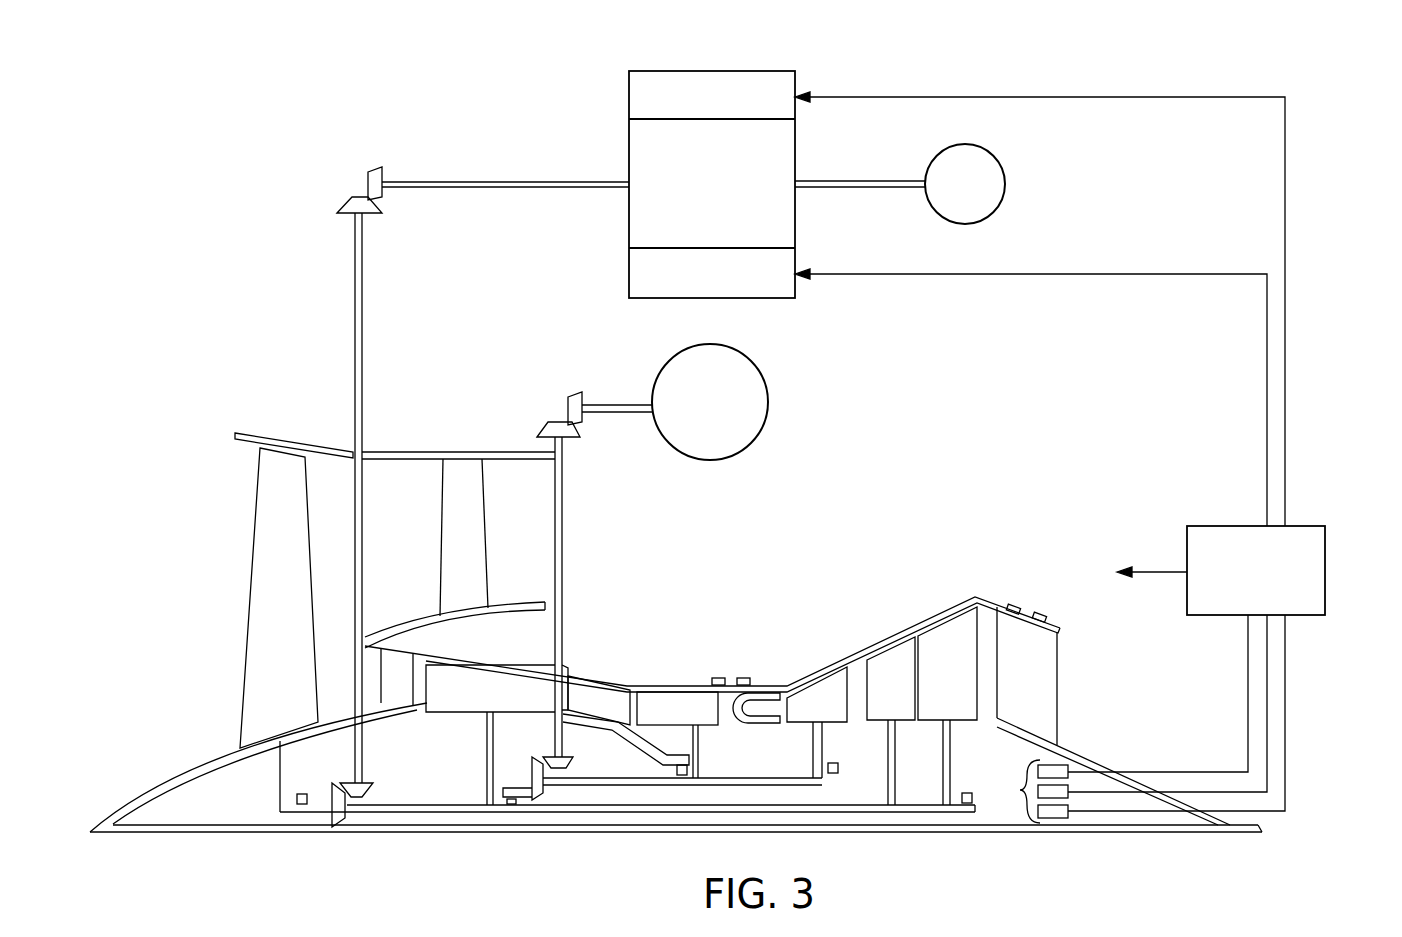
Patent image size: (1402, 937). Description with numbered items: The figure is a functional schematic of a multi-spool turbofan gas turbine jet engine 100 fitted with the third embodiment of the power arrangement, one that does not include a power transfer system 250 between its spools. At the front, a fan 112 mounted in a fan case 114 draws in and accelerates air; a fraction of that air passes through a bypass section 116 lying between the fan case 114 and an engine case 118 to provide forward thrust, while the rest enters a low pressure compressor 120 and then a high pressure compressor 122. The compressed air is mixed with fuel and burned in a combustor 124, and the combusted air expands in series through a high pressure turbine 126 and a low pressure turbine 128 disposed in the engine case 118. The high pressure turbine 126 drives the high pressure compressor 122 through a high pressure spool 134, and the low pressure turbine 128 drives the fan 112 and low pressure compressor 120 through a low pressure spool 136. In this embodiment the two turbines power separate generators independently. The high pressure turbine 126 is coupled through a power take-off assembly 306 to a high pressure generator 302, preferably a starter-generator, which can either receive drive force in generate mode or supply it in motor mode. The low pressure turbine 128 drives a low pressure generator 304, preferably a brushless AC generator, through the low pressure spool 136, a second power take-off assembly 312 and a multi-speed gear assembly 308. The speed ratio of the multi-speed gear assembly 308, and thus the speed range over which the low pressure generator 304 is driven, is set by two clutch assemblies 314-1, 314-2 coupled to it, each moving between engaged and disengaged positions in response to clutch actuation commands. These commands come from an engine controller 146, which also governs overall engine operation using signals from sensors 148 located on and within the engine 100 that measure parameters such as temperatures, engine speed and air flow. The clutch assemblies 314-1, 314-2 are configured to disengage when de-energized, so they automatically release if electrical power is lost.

The multi-spool turbofan gas turbine jet engine 100 is at (155, 770).
The fan 112 is at (262, 528).
The fan case 114 is at (272, 437).
The bypass section 116 is at (420, 535).
The engine case 118 is at (600, 676).
The low pressure compressor 120 is at (513, 690).
The high pressure compressor 122 is at (655, 703).
The combustor 124 is at (757, 703).
The high pressure turbine 126 is at (833, 688).
The low pressure turbine 128 is at (890, 657).
The high pressure spool 134 is at (645, 778).
The low pressure spool 136 is at (420, 803).
The engine controller 146 is at (1325, 572).
The sensors 148 is at (1020, 790).
The power transfer system 250 is at (312, 146).
The high pressure generator 302 is at (768, 404).
The low pressure generator 304 is at (1005, 186).
The power take-off assembly 306 is at (594, 532).
The multi-speed gear assembly 308 is at (629, 148).
The second power take-off assembly 312 is at (318, 320).
The clutch assembly 314-1 is at (765, 71).
The clutch assembly 314-2 is at (765, 298).